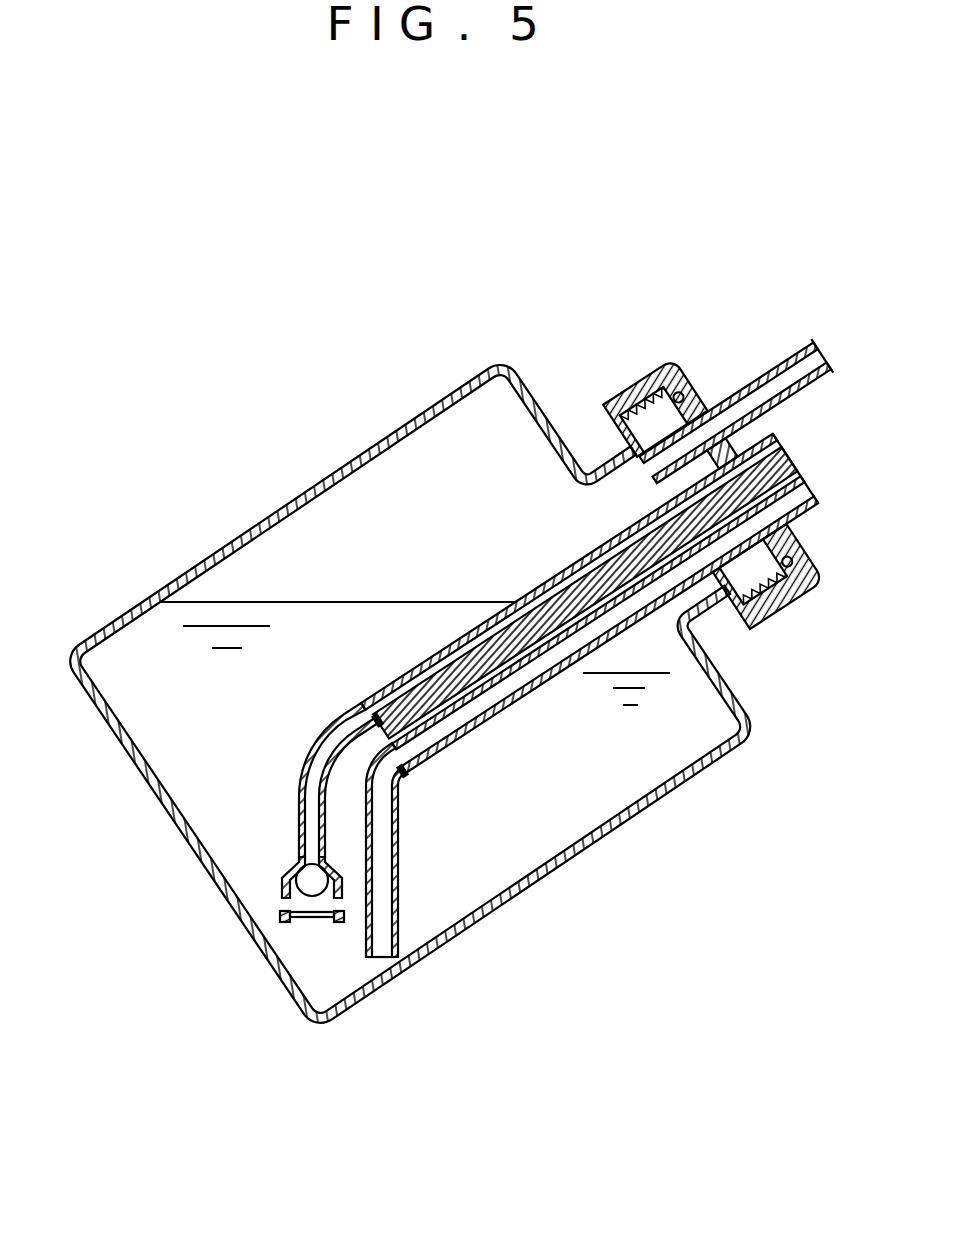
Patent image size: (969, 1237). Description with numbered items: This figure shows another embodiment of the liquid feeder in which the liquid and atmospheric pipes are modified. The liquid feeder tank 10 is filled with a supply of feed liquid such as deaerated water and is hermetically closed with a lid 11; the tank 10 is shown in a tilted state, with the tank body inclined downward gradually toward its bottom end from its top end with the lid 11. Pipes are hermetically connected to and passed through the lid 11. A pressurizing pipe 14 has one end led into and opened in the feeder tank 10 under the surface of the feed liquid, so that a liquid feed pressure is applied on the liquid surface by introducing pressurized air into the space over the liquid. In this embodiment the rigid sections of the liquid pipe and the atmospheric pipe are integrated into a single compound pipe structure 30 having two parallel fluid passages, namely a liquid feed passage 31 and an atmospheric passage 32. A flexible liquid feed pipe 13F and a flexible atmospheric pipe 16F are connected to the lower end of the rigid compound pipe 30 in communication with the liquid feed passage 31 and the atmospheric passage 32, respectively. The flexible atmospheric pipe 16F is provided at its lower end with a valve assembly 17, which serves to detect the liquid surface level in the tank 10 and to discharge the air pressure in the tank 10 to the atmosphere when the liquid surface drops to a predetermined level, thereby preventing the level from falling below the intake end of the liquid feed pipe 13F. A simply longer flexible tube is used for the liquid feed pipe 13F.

The liquid feeder tank 10 is at (340, 470).
The lid 11 is at (640, 383).
The pressurizing pipe 14 is at (747, 387).
The flexible atmospheric pipe 16F is at (300, 782).
The valve assembly 17 is at (297, 920).
The flexible liquid feed pipe 13F is at (397, 893).
The compound pipe structure 30 is at (565, 668).
The liquid feed passage 31 is at (630, 608).
The atmospheric passage 32 is at (463, 653).